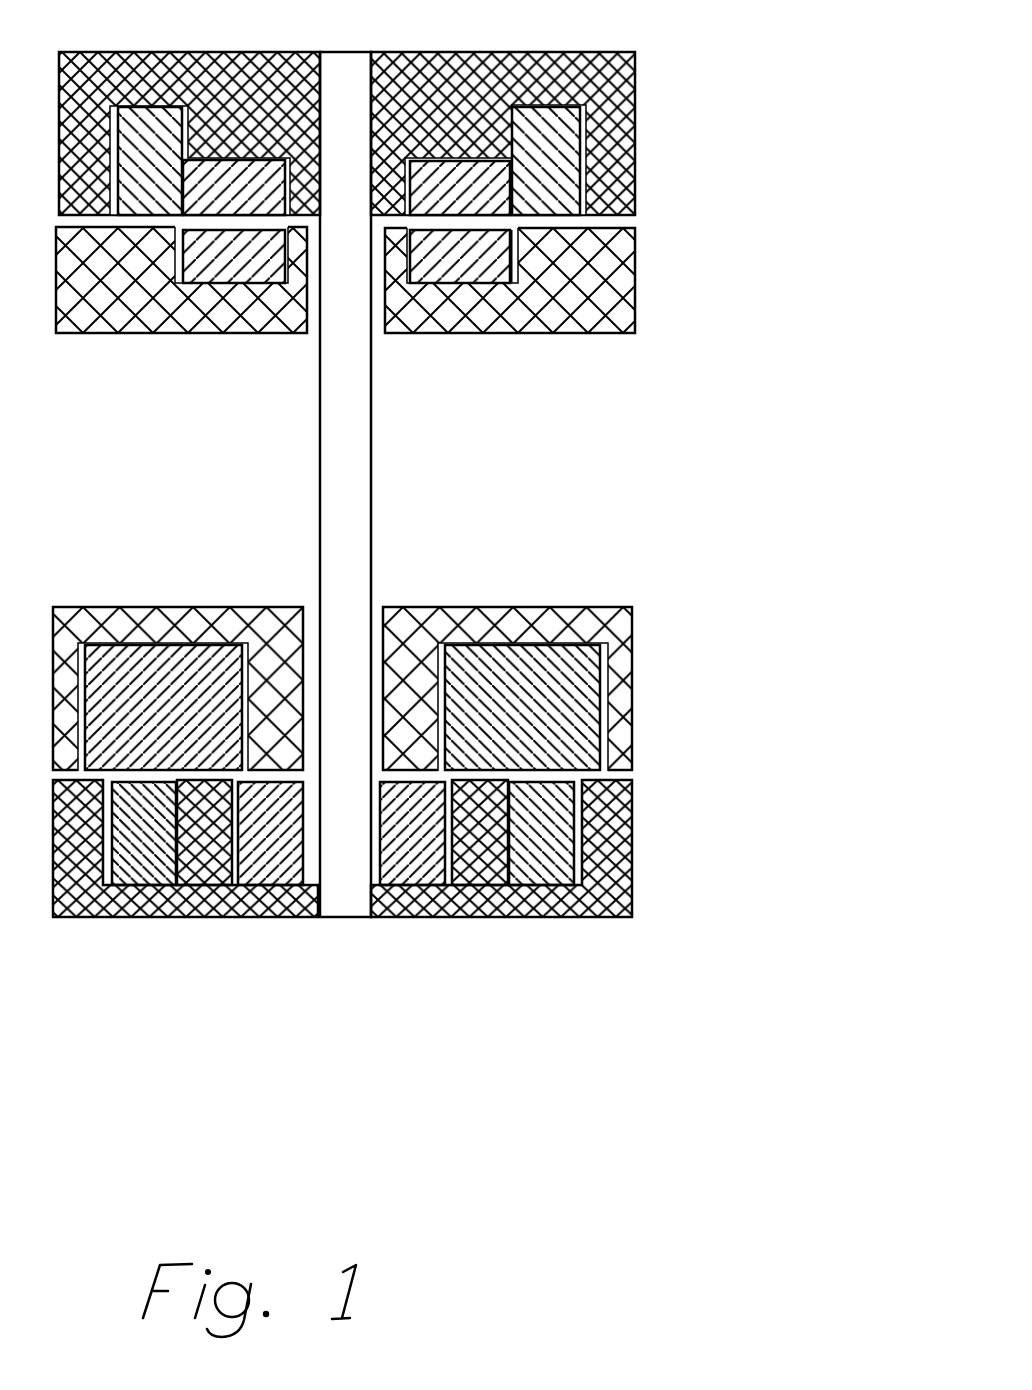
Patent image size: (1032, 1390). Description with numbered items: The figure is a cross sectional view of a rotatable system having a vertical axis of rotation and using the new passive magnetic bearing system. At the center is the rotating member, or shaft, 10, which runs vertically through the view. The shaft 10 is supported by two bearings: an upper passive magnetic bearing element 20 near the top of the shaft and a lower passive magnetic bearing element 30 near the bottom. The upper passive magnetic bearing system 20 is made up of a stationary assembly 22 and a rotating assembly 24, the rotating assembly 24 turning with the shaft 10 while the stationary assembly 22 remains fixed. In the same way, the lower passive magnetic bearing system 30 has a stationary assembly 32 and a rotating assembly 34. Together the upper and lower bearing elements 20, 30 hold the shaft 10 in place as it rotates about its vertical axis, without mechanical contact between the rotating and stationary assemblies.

The rotating member, or shaft 10 is at (449, 484).
The upper passive magnetic bearing element 20 is at (473, 210).
The stationary assembly 22 is at (418, 318).
The rotating assembly 24 is at (424, 111).
The lower passive magnetic bearing element 30 is at (470, 781).
The stationary assembly 32 is at (425, 675).
The rotating assembly 34 is at (682, 774).